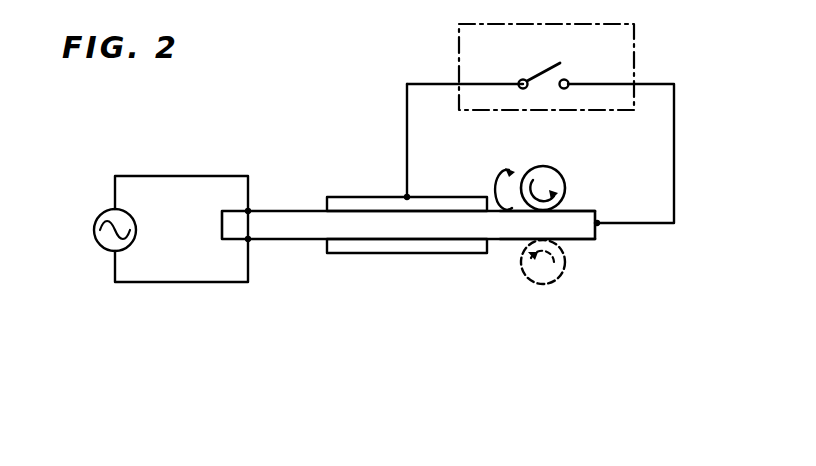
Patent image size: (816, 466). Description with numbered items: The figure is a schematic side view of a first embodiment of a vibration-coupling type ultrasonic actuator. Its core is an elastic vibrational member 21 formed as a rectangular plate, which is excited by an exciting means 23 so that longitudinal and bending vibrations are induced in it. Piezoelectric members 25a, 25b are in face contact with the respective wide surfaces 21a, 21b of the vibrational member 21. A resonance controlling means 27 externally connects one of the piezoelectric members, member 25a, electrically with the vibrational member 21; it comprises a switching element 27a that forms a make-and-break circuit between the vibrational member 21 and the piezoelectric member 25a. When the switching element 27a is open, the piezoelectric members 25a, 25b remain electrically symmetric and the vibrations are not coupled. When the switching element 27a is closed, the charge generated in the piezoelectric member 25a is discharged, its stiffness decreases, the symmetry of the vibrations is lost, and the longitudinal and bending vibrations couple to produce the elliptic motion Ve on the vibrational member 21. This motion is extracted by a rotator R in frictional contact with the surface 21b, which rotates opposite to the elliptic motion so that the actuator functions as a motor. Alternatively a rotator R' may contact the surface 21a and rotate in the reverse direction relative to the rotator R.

The elastic vibrational member 21 is at (462, 224).
The wide surface of vibrational member 21a is at (580, 210).
The wide surface of vibrational member 21b is at (580, 240).
The exciting means 23 is at (100, 213).
The piezoelectric member 25a is at (354, 201).
The piezoelectric member 25b is at (358, 249).
The resonance controlling means 27 is at (634, 46).
The switching element 27a is at (537, 70).
The rotator R is at (558, 167).
The rotator R' is at (562, 293).
The elliptic motion Ve is at (497, 166).